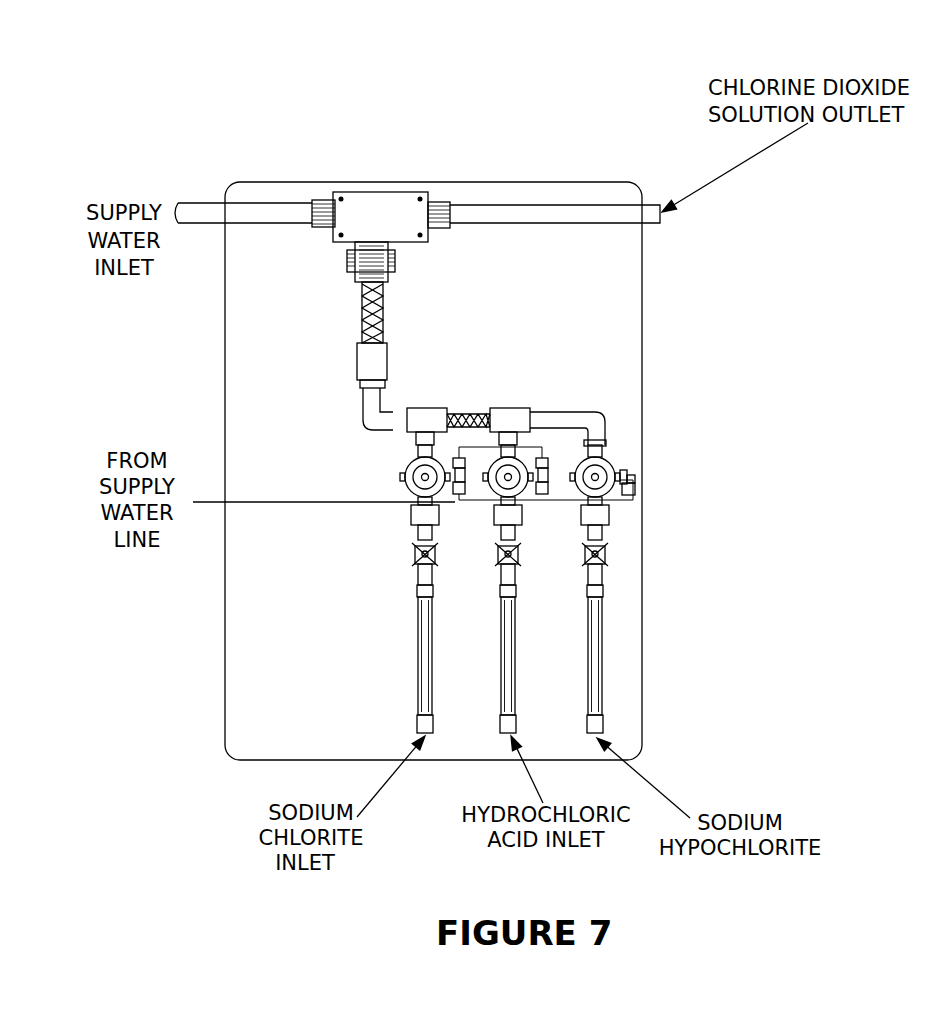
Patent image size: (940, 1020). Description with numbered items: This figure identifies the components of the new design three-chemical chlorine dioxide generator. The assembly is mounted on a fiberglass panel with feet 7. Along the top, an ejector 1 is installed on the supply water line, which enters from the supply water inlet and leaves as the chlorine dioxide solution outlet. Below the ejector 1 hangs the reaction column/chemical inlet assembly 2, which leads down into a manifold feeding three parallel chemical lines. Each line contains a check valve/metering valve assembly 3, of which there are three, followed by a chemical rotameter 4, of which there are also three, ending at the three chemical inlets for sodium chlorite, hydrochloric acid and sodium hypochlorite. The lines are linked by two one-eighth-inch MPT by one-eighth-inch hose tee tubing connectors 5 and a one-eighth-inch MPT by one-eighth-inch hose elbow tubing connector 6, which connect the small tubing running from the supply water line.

The ejector 1 is at (376, 178).
The reaction column/chemical inlet assembly 2 is at (352, 336).
The check valve/metering valve assembly 3 is at (492, 515).
The chemical rotameter 4 is at (487, 659).
The hose tee tubing connector 5 is at (480, 449).
The hose elbow tubing connector 6 is at (650, 483).
The fiberglass panel with feet 7 is at (433, 471).